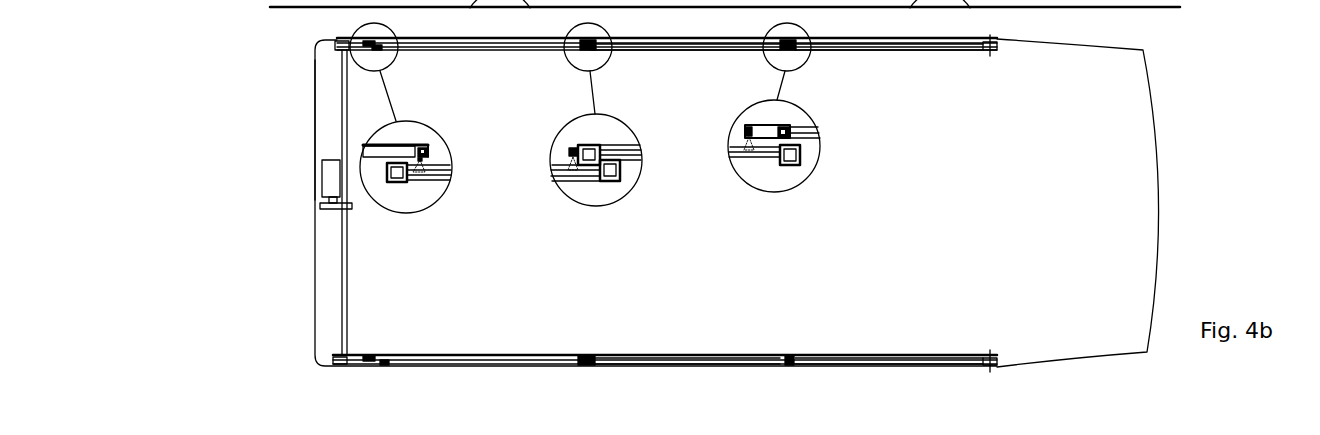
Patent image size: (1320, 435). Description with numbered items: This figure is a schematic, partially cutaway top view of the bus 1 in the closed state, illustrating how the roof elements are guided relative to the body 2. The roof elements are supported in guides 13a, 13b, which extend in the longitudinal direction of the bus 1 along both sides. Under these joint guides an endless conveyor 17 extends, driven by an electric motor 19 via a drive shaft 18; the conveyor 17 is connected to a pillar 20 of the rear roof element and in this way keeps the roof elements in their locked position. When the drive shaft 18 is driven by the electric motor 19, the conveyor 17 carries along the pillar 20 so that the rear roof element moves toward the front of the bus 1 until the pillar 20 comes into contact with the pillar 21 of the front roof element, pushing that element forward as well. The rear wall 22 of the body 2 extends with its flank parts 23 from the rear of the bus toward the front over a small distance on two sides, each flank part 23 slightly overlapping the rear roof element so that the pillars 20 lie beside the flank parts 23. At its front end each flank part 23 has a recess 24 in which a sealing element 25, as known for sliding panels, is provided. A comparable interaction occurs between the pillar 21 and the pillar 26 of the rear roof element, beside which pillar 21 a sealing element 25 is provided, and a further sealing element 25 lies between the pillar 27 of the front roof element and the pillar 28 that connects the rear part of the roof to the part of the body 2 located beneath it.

The bus 1 is at (251, 216).
The body 2 is at (306, 245).
The guide 13a is at (930, 42).
The guide 13b is at (698, 56).
The endless conveyor 17 is at (493, 55).
The drive shaft 18 is at (367, 245).
The electric motor 19 is at (322, 175).
The pillar 20 is at (395, 177).
The pillar 21 is at (591, 152).
The rear wall 22 is at (315, 115).
The flank part 23 is at (345, 42).
The recess 24 is at (428, 146).
The sealing element 25 is at (423, 161).
The pillar 26 is at (613, 170).
The pillar 27 is at (800, 158).
The pillar 28 is at (768, 128).